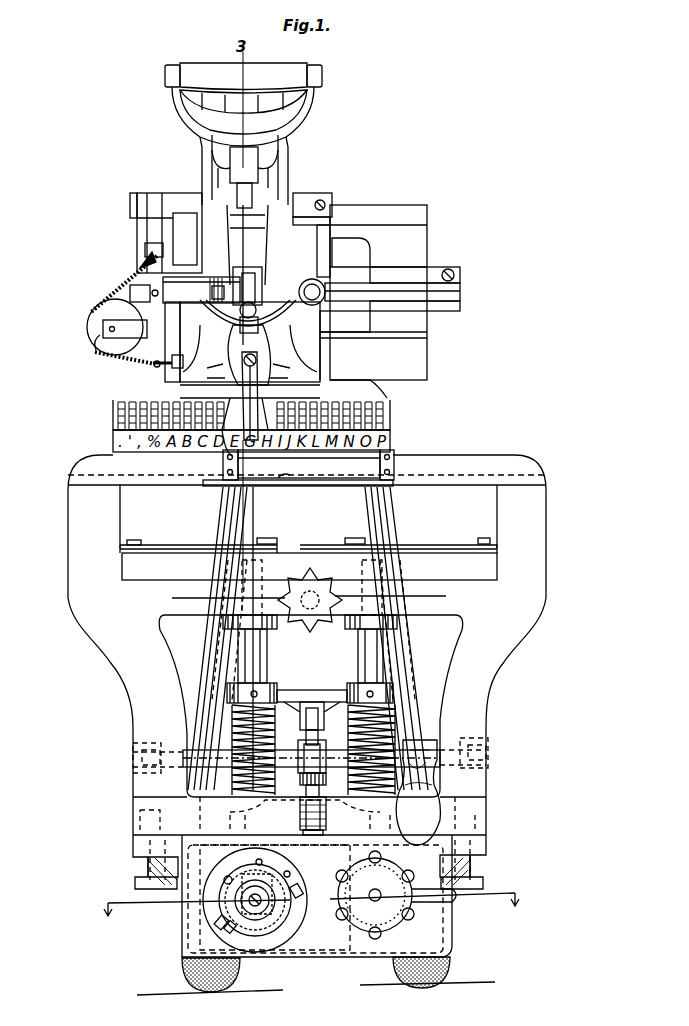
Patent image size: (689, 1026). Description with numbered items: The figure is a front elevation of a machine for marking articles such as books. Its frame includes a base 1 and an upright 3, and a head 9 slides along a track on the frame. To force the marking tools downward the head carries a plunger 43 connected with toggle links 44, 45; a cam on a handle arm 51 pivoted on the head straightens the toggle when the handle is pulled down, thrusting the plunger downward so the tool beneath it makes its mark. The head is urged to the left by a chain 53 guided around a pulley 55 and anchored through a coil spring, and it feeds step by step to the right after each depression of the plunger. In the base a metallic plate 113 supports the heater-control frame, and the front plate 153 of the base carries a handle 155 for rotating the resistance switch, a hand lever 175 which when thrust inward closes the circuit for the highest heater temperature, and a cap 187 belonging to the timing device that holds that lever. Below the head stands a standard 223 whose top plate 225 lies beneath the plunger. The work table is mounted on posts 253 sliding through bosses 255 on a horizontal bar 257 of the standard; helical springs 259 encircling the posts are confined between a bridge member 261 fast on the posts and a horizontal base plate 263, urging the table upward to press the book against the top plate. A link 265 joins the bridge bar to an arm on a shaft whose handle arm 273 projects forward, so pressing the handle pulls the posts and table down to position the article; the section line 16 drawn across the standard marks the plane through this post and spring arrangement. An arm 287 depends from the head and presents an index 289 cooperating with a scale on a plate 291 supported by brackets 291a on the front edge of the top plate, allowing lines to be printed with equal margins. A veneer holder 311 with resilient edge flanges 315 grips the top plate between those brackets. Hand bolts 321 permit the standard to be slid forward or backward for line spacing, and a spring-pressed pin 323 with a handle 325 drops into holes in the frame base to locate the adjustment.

The base 1 is at (452, 942).
The upright 3 is at (393, 516).
The head 9 is at (308, 918).
The section line 16- 16 is at (304, 598).
The plunger 43 is at (256, 327).
The toggle link 44 is at (303, 212).
The toggle link 45 is at (256, 176).
The handle arm 51 is at (205, 176).
The chain 53 is at (120, 363).
The pulley 55 is at (105, 323).
The metallic plate 113 is at (335, 960).
The front plate 153 is at (205, 932).
The handle 155 is at (270, 925).
The hand lever 175 is at (450, 903).
The cap 187 is at (385, 915).
The standard 223 is at (515, 632).
The top plate 225 is at (520, 456).
The posts 253 is at (238, 648).
The bosses 255 is at (282, 625).
The horizontal bar 257 is at (432, 580).
The helical springs 259 is at (235, 725).
The bridge member 261 is at (305, 690).
The horizontal base plate 263 is at (185, 810).
The link 265 is at (305, 735).
The handle arm 273 is at (425, 797).
The arm 287 is at (262, 388).
The index 289 is at (218, 398).
The plate 291 is at (283, 452).
The brackets 291a is at (222, 468).
The holder 311 is at (222, 487).
The edge flanges 315 is at (288, 478).
The hand bolts 321 is at (128, 876).
The spring-pressed pin 323 is at (328, 812).
The handle 325 is at (300, 778).